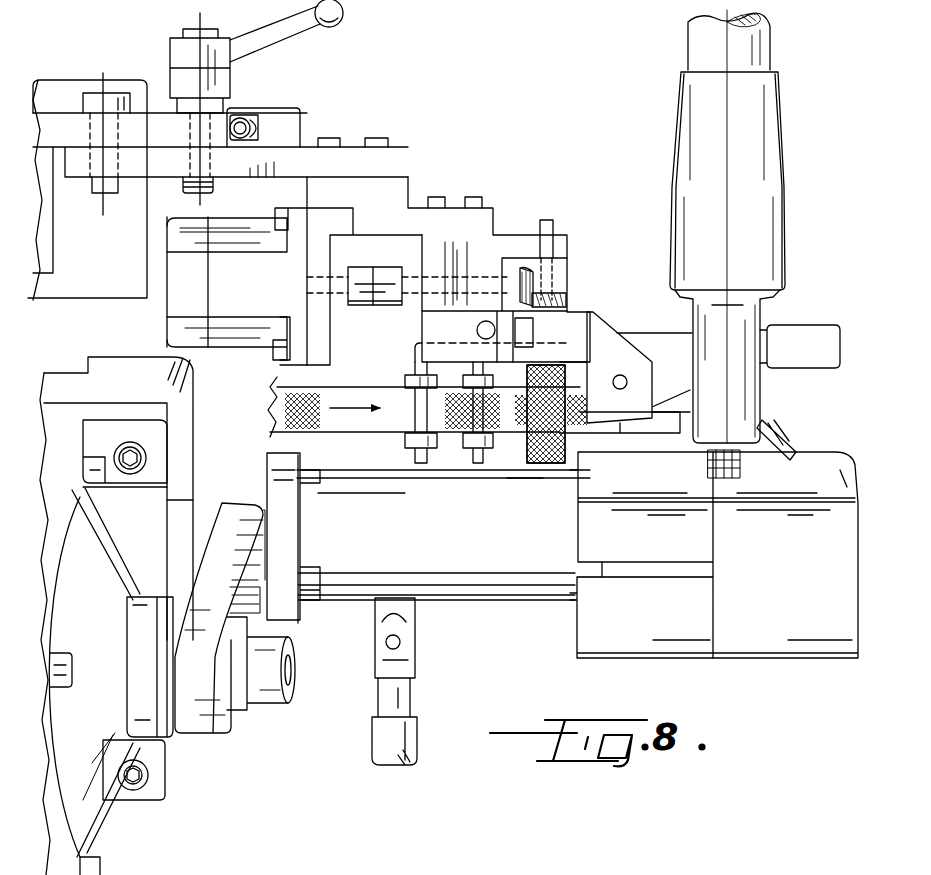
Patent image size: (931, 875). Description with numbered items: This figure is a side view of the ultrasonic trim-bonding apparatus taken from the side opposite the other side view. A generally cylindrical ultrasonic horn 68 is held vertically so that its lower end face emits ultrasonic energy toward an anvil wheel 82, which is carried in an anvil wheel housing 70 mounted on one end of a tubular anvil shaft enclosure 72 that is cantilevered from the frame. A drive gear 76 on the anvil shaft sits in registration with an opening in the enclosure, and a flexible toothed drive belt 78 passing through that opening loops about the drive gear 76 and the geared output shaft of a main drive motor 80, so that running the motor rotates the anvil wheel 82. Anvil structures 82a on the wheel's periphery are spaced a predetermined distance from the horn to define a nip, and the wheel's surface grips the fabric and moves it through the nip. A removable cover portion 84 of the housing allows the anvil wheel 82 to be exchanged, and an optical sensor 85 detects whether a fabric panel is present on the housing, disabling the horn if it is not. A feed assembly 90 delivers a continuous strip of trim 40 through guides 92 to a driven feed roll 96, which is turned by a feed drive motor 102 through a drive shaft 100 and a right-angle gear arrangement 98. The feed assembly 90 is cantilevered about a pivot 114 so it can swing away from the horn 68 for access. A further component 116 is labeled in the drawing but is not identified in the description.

The trim 40 is at (345, 435).
The ultrasonic horn 68 is at (752, 388).
The anvil wheel housing 70 is at (725, 616).
The tubular anvil shaft enclosure 72 is at (488, 583).
The drive gear 76 is at (282, 545).
The flexible toothed drive belt 78 is at (203, 717).
The main drive motor 80 is at (100, 770).
The anvil wheel 82 is at (710, 462).
The anvil structures 82a is at (640, 726).
The cover portion 84 is at (800, 589).
The optical sensor 85 is at (815, 334).
The feed assembly 90 is at (518, 212).
The guides 92 is at (468, 460).
The driven feed roll 96 is at (541, 465).
The right-angle gear arrangement 98 is at (556, 290).
The drive shaft 100 is at (413, 293).
The feed drive motor 102 is at (220, 290).
The pivot 114 is at (90, 97).
The lever clamp 116 is at (232, 80).